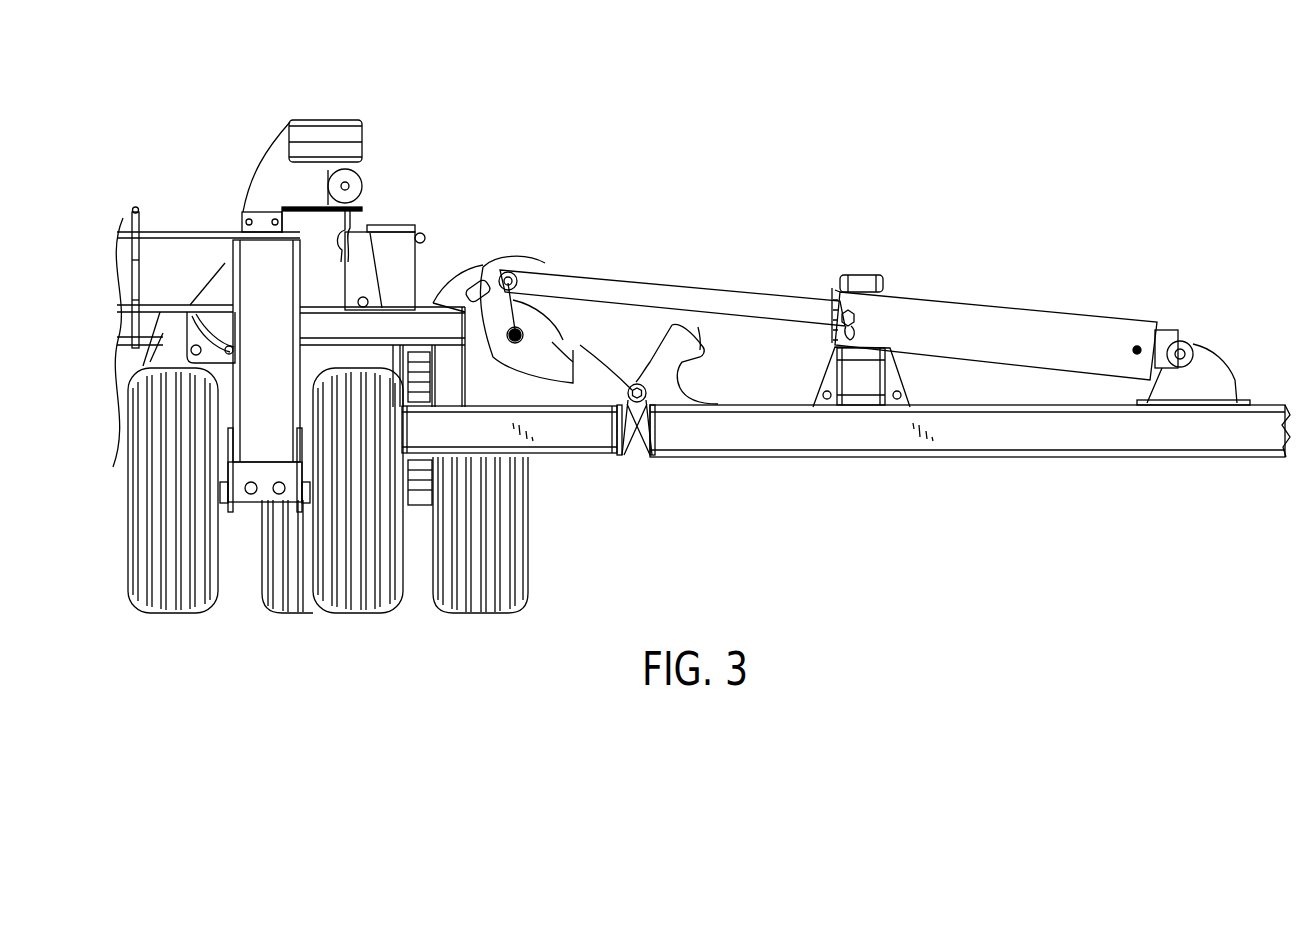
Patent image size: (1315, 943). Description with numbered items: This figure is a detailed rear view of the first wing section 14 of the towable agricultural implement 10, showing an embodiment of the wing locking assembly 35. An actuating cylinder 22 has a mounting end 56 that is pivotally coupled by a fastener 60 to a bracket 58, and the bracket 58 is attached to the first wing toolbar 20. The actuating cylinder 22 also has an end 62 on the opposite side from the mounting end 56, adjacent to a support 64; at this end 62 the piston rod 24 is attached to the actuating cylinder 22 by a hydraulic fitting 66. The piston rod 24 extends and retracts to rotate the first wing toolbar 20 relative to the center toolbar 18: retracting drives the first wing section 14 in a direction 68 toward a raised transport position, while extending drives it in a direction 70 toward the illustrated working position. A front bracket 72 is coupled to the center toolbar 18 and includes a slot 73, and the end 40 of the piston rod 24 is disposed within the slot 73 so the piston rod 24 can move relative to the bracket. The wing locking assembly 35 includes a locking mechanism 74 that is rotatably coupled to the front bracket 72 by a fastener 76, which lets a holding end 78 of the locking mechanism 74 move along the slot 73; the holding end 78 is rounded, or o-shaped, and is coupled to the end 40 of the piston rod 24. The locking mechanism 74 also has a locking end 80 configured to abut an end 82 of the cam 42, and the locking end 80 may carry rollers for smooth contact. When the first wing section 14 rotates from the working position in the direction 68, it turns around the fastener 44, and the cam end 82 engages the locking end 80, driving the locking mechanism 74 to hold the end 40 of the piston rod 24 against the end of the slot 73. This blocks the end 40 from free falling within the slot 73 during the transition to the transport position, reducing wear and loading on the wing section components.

The towable agricultural implement 10 is at (230, 86).
The first wing section 14 is at (914, 487).
The center toolbar 18 is at (569, 439).
The first wing toolbar 20 is at (1035, 433).
The actuating cylinder 22 is at (1014, 321).
The piston rod 24 is at (682, 298).
The wing locking assembly 35 is at (608, 198).
The end of the piston rod 40 is at (510, 279).
The cam 42 is at (682, 358).
The fastener 44 is at (650, 421).
The mounting end 56 is at (1163, 345).
The bracket 58 is at (1213, 374).
The fastener 60 is at (1189, 350).
The end 62 is at (863, 300).
The support 64 is at (862, 277).
The hydraulic fitting 66 is at (838, 308).
The direction 68 is at (762, 126).
The direction 70 is at (830, 142).
The front bracket 72 is at (459, 296).
The slot 73 is at (485, 263).
The locking mechanism 74 is at (575, 325).
The fastener 76 is at (518, 330).
The holding end 78 is at (483, 285).
The locking end 80 is at (552, 342).
The end of the cam 82 is at (698, 327).